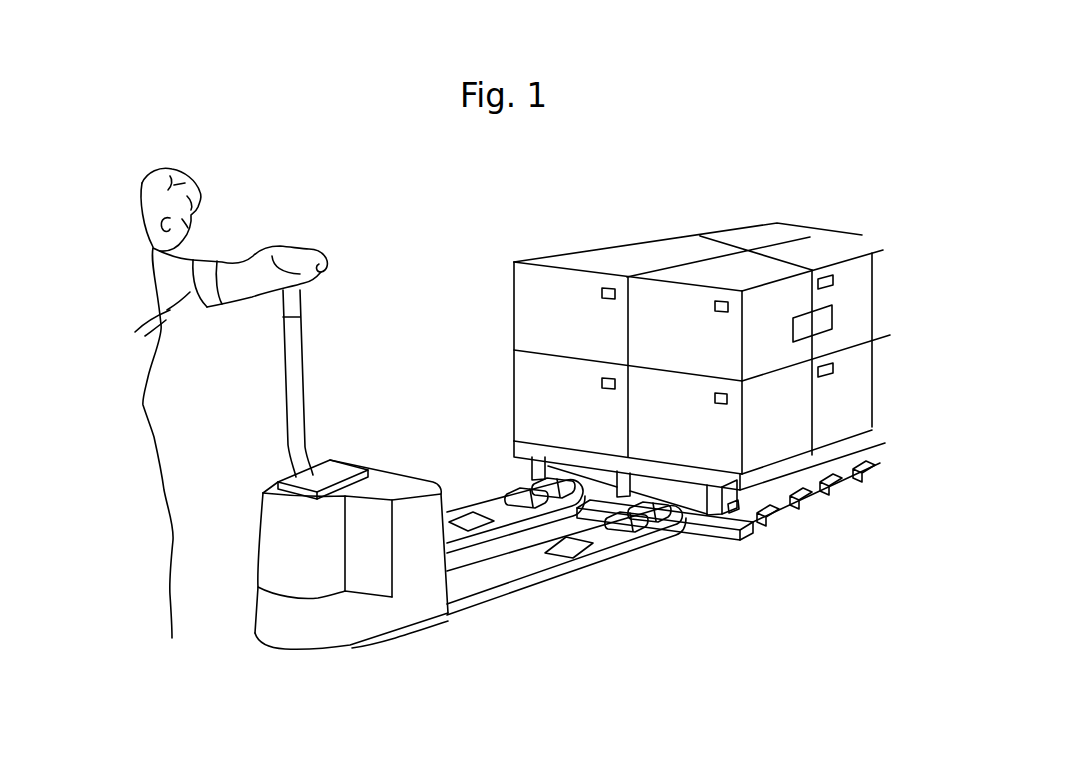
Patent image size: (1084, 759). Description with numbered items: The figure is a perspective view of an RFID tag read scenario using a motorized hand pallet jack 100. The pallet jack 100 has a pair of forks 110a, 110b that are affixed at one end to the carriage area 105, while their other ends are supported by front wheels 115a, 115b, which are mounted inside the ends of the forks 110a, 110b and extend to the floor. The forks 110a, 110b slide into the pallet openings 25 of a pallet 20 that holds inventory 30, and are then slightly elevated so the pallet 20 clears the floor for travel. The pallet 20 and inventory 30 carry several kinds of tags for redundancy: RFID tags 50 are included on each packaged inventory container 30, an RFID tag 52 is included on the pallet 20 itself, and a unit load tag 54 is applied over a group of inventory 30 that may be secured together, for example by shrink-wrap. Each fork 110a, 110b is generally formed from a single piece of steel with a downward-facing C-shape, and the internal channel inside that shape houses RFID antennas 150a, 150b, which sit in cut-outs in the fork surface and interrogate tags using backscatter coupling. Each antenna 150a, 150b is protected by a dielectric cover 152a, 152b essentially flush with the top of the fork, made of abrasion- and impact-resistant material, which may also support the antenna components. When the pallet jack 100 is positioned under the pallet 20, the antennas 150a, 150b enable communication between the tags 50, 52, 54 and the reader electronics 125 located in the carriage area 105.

The pallet jack 100 is at (241, 442).
The carriage area 105 is at (276, 674).
The reader electronics 125 is at (373, 462).
The RFID antenna 150a is at (542, 563).
The RFID antenna 150b is at (499, 537).
The fork 110a is at (614, 538).
The fork 110b is at (466, 519).
The front wheel 115a is at (657, 513).
The front wheel 115b is at (546, 487).
The dielectric cover 152a is at (594, 546).
The dielectric cover 152b is at (493, 506).
The inventory 30 is at (873, 307).
The RFID tag 50 is at (603, 292).
The unit load tag 54 is at (803, 318).
The pallet 20 is at (812, 500).
The pallet openings 25 is at (582, 456).
The RFID tag 52 is at (738, 511).